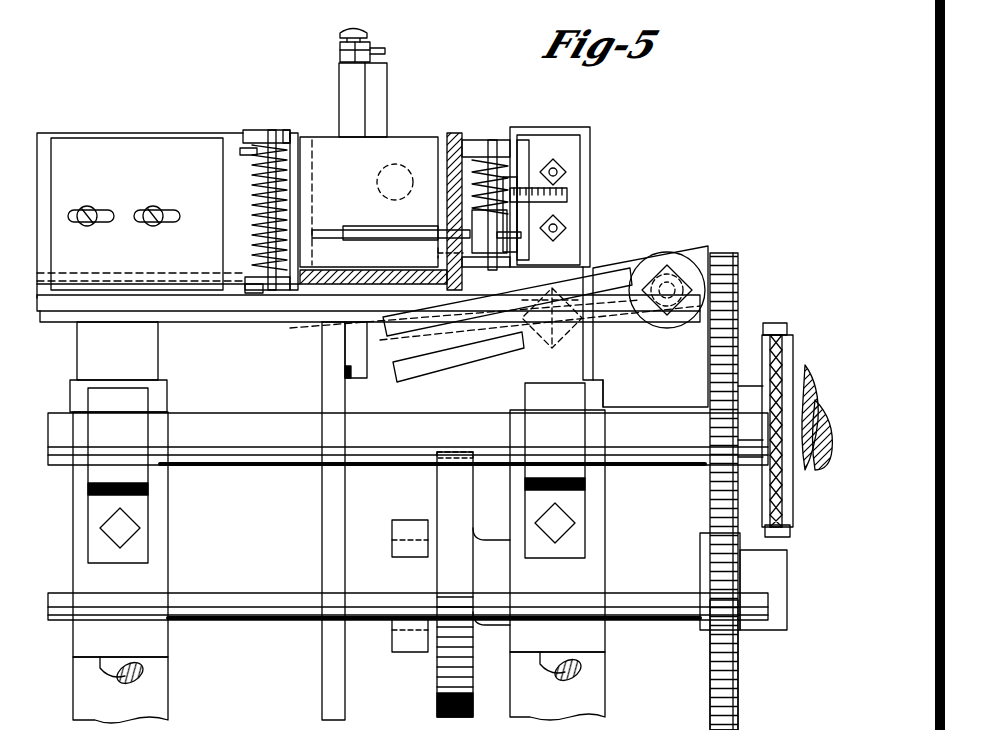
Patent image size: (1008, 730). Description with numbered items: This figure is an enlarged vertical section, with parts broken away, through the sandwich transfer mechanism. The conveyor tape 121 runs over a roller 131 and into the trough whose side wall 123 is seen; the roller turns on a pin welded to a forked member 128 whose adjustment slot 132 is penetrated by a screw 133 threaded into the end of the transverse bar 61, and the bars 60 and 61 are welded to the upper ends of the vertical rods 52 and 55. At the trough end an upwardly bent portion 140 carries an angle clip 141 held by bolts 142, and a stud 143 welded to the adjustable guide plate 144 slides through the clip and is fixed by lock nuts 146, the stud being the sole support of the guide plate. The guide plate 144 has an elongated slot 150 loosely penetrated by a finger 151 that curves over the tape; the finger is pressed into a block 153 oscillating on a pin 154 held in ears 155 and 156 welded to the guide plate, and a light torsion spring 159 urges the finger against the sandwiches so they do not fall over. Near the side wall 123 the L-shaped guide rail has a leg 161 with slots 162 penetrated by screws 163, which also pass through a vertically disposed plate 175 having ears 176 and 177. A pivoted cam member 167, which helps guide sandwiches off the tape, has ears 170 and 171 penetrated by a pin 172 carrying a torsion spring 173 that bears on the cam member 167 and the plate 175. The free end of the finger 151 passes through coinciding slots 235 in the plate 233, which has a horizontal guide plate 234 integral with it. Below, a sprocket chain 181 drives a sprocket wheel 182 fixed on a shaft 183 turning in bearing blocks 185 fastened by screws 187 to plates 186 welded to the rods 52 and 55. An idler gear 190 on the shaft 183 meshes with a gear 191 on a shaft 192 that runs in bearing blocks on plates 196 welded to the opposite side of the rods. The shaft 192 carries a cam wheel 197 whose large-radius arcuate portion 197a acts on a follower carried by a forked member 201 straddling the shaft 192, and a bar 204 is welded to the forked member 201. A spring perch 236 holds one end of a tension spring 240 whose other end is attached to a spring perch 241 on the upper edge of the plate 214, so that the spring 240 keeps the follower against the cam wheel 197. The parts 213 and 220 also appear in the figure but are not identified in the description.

The rod 52 is at (145, 670).
The rod 55 is at (582, 668).
The transverse bar 60 is at (77, 366).
The transverse bar 61 is at (604, 380).
The conveyor tape 121 is at (160, 276).
The side wall 123 is at (42, 135).
The forked member 128 is at (630, 330).
The roller 131 is at (660, 318).
The adjustment slot 132 is at (428, 356).
The screw 133 is at (540, 346).
The upwardly bent portion 140 is at (588, 128).
The angle clip 141 is at (580, 145).
The bolts 142 is at (566, 170).
The stud 143 is at (567, 193).
The adjustable guide plate 144 is at (453, 132).
The lock nuts 146 is at (527, 162).
The elongated slot 150 is at (440, 252).
The finger 151 is at (330, 230).
The block 153 is at (518, 246).
The pin 154 is at (494, 140).
The ear 155 is at (475, 140).
The ear 156 is at (478, 290).
The torsion spring 159 is at (472, 165).
The leg 161 is at (118, 140).
The slots 162 is at (78, 228).
The screws 163 is at (84, 206).
The pivoted cam member 167 is at (296, 140).
The ear 170 is at (286, 130).
The ear 171 is at (272, 290).
The pin 172 is at (270, 130).
The torsion spring 173 is at (256, 192).
The vertically disposed plate 175 is at (240, 150).
The ear 176 is at (250, 130).
The ear 177 is at (248, 290).
The sprocket chain 181 is at (780, 326).
The sprocket wheel 182 is at (793, 510).
The shaft 183 is at (264, 412).
The bearing blocks 185 is at (148, 500).
The plates 186 is at (168, 550).
The screws 187 is at (140, 528).
The idler gear 190 is at (710, 370).
The gear 191 is at (712, 696).
The shaft 192 is at (236, 620).
The plates 196 is at (168, 698).
The cam wheel 197 is at (437, 494).
The arcuate portion 197a is at (437, 680).
The forked member 201 is at (392, 538).
The bar 204 is at (430, 652).
The column 213 is at (322, 528).
The plate 214 is at (350, 378).
The base plate 220 is at (283, 290).
The plate 233 is at (388, 138).
The guide plate 234 is at (314, 160).
The slots 235 is at (366, 226).
The spring perch 236 is at (387, 72).
The tension spring 240 is at (366, 44).
The spring perch 241 is at (348, 30).